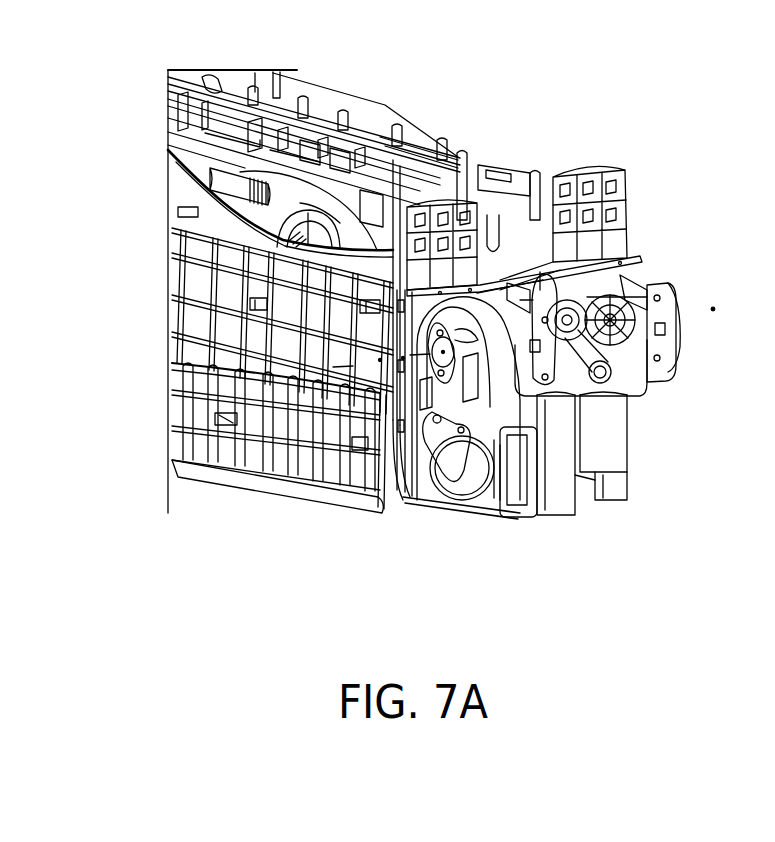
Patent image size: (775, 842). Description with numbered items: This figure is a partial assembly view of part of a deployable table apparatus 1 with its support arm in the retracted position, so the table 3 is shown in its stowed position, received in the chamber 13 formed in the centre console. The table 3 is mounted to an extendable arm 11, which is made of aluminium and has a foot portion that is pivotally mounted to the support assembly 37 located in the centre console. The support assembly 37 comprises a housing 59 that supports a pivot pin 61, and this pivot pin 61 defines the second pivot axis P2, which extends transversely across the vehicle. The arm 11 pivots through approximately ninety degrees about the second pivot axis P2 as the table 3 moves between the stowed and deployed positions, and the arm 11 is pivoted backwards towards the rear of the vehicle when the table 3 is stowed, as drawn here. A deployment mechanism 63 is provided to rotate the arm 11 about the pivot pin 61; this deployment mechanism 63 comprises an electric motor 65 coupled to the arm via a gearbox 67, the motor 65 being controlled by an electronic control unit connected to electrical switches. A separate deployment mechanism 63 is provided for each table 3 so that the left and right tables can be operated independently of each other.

The deployable table apparatus 1 is at (503, 52).
The table 3 is at (240, 205).
The extendable arm 11 is at (414, 499).
The chamber 13 is at (457, 139).
The support assembly 37 is at (329, 527).
The housing 59 is at (273, 443).
The pivot pin 61 is at (445, 356).
The deployment mechanism 63 is at (597, 533).
The electric motor 65 is at (553, 465).
The gearbox 67 is at (560, 367).
The second pivot axis P2 is at (683, 316).